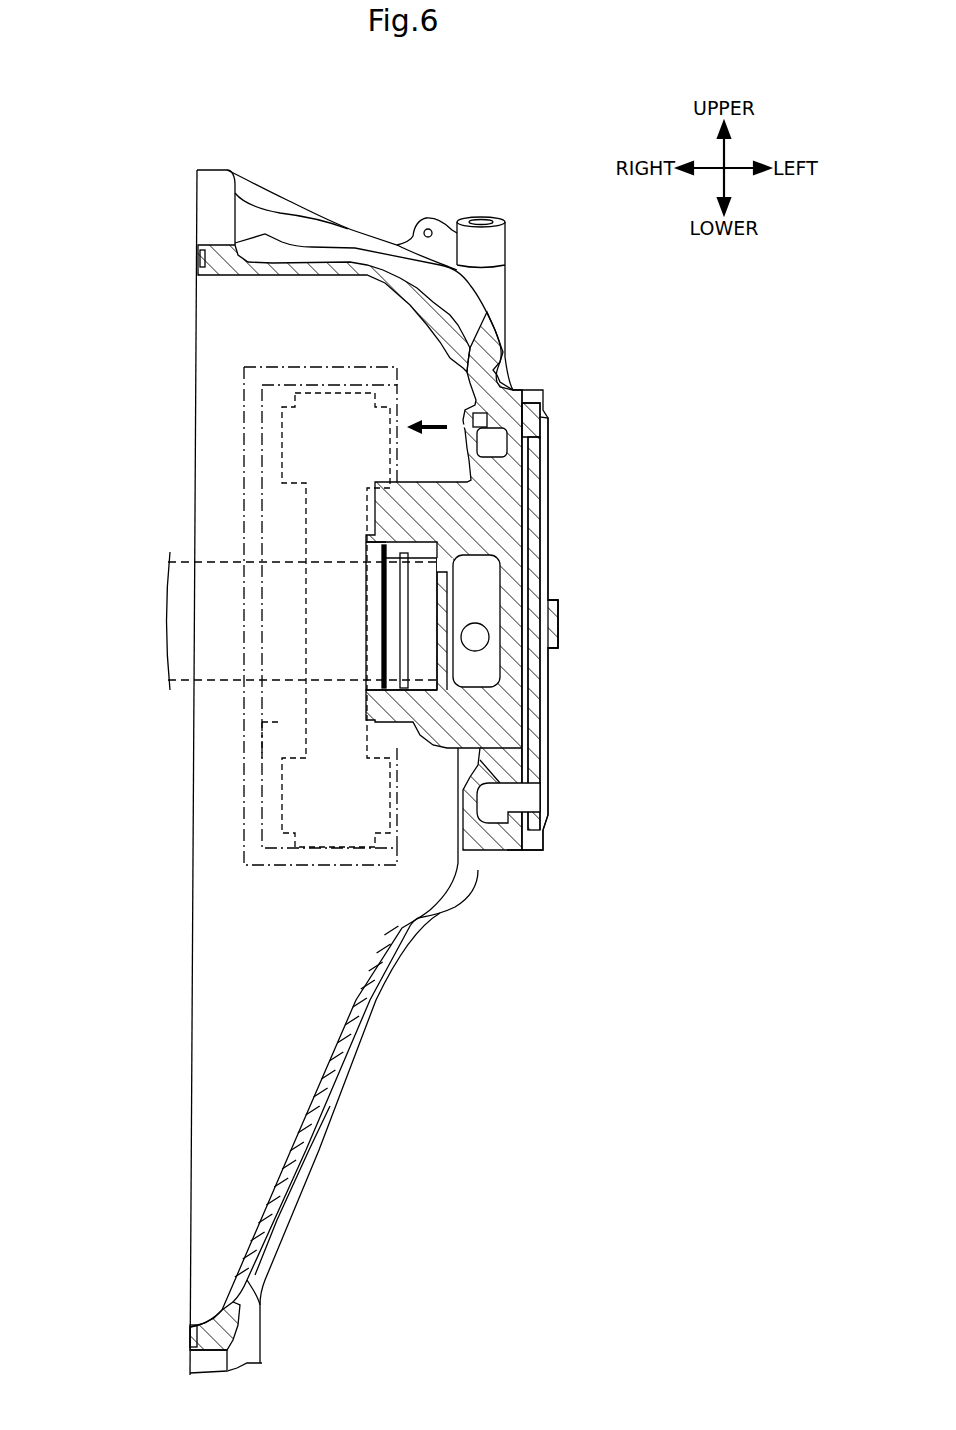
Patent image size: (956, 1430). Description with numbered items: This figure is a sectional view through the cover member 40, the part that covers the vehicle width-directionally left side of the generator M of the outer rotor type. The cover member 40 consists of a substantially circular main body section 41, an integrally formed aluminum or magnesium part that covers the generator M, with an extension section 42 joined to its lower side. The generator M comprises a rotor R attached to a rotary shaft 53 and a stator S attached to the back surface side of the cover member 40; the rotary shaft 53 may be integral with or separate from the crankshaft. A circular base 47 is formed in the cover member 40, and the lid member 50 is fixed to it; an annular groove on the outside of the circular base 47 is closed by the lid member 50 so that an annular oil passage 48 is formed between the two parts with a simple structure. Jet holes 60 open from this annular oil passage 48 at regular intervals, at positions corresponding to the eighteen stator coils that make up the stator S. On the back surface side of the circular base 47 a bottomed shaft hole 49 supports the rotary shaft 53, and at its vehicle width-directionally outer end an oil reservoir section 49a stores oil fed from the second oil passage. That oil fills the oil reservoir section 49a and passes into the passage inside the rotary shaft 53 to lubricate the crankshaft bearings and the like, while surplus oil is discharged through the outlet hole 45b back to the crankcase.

The cover member 40 is at (368, 197).
The main body section 41 is at (477, 328).
The extension section 42 is at (330, 1106).
The outlet hole 45b is at (480, 637).
The circular base 47 is at (507, 753).
The oil passage 48 is at (498, 797).
The shaft hole 49 is at (426, 618).
The oil reservoir section 49a is at (476, 592).
The lid member 50 is at (532, 490).
The jet holes 60 is at (493, 428).
The generator M is at (213, 386).
The rotor R is at (244, 475).
The stator S is at (303, 520).
The rotary shaft 53 is at (278, 685).